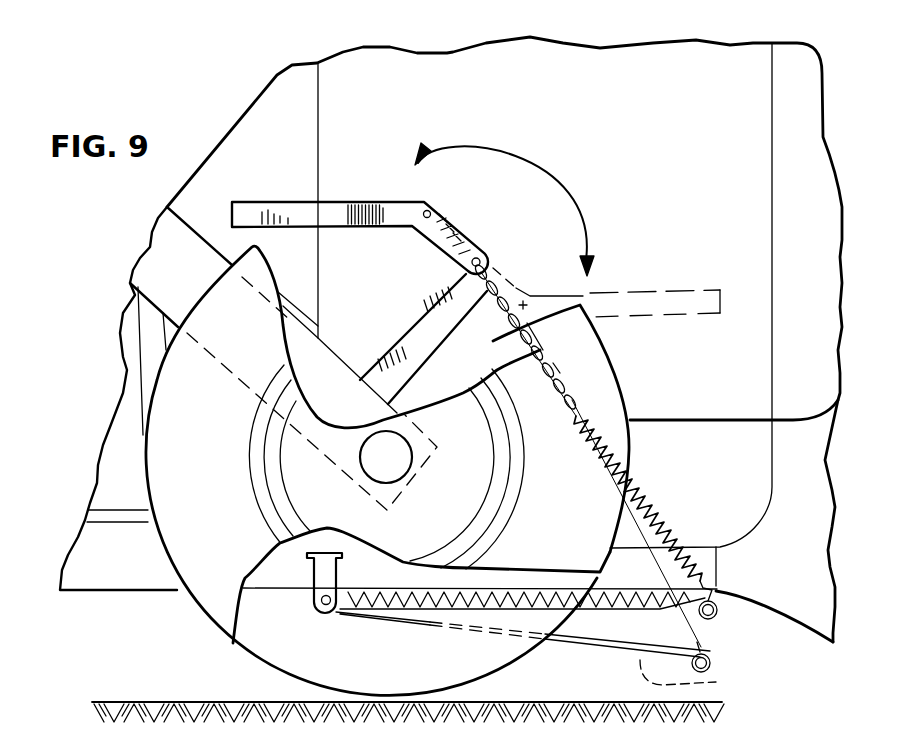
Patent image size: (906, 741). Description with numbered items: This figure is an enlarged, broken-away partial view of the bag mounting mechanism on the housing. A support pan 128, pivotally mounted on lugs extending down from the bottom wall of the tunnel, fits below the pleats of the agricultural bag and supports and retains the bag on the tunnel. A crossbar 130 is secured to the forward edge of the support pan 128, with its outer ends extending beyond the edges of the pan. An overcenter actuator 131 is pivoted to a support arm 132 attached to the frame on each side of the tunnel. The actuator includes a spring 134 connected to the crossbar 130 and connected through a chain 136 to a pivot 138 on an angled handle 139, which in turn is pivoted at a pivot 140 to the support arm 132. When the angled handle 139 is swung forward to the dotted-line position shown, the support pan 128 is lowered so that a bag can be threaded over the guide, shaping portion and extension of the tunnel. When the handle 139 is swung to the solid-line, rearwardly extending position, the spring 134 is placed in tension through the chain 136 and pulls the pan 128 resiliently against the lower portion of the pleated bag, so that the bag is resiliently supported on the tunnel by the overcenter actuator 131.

The support pan 128 is at (716, 682).
The crossbar 130 is at (718, 611).
The overcenter actuator 131 is at (366, 203).
The support arm 132 is at (426, 305).
The spring 134 is at (644, 500).
The chain 136 is at (540, 350).
The pivot 138 is at (429, 214).
The angled handle 139 is at (460, 230).
The handle pivot 140 is at (480, 258).